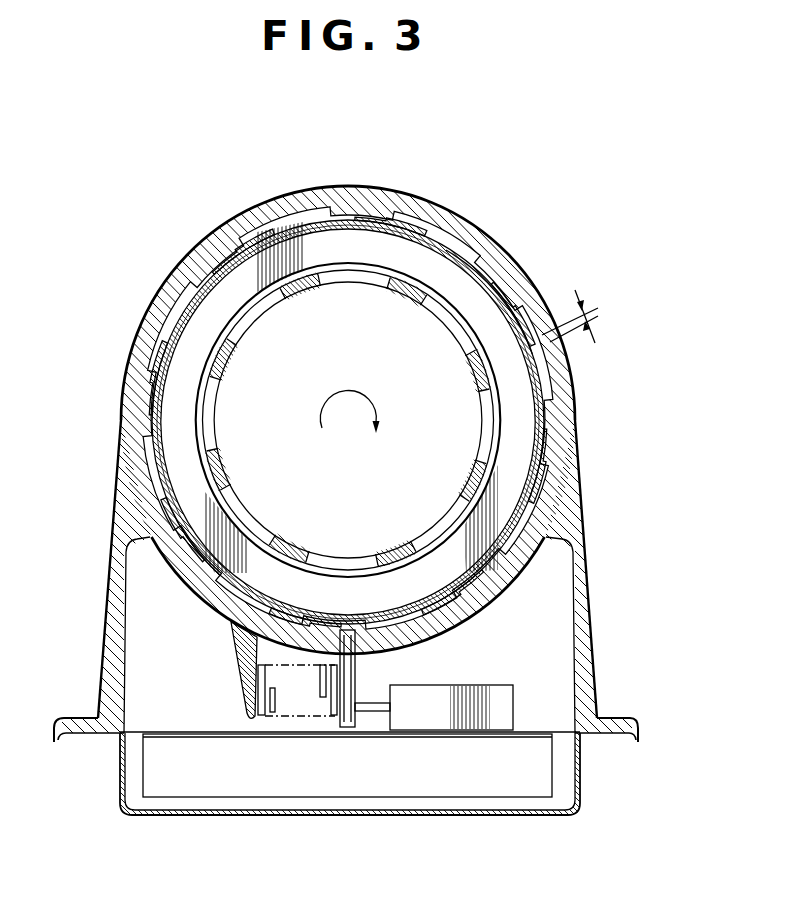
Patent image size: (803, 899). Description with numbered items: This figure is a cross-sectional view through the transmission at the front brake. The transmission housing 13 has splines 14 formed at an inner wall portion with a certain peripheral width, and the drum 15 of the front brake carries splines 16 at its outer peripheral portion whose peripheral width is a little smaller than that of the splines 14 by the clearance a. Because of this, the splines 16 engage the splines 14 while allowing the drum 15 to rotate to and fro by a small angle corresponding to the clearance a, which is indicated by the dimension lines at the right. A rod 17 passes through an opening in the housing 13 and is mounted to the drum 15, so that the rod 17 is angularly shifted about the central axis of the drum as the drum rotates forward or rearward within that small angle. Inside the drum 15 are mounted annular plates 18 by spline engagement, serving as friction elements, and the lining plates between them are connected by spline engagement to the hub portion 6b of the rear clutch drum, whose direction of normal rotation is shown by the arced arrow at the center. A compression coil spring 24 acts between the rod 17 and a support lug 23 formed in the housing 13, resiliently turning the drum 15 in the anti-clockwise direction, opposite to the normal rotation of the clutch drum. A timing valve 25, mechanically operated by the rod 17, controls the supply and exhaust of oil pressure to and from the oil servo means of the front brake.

The transmission housing 13 is at (298, 191).
The splines 14 is at (388, 205).
The drum of the front brake 15 is at (435, 228).
The splines 16 is at (361, 221).
The rod 17 is at (358, 673).
The annular plates 18 is at (472, 290).
The hub portion of the rear clutch drum 6b is at (470, 356).
The support lug 23 is at (242, 656).
The compression coil spring 24 is at (335, 706).
The timing valve 25 is at (508, 698).
The clearance a is at (570, 313).